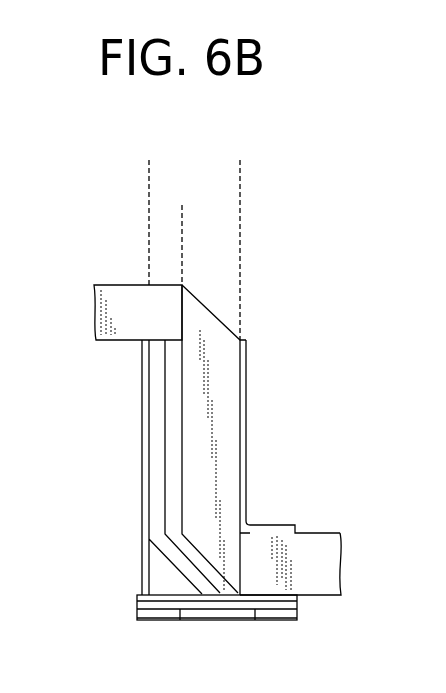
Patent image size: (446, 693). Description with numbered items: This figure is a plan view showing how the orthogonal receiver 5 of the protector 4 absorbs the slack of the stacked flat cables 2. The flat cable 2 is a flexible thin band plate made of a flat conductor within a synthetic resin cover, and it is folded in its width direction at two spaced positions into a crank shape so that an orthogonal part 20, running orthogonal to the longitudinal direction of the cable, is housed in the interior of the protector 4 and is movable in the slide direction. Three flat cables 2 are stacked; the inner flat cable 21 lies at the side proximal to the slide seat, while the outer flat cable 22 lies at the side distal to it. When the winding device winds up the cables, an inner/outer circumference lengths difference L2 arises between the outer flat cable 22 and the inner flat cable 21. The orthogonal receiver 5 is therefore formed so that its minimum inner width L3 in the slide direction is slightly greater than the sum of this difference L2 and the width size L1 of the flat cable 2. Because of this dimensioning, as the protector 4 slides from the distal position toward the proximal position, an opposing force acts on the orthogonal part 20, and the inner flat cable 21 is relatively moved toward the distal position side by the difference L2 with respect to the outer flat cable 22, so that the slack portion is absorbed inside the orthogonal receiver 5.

The flat cable 2 is at (315, 547).
The inner flat cable 21 is at (155, 443).
The outer flat cable 22 is at (200, 480).
The orthogonal part 20 is at (222, 440).
The protector 4 is at (246, 340).
The orthogonal receiver 5 is at (246, 385).
The width size of the flat cable L1 is at (182, 213).
The inner/outer circumference lengths difference L2 is at (167, 212).
The size of the second wall in the slide direction L3 is at (239, 167).